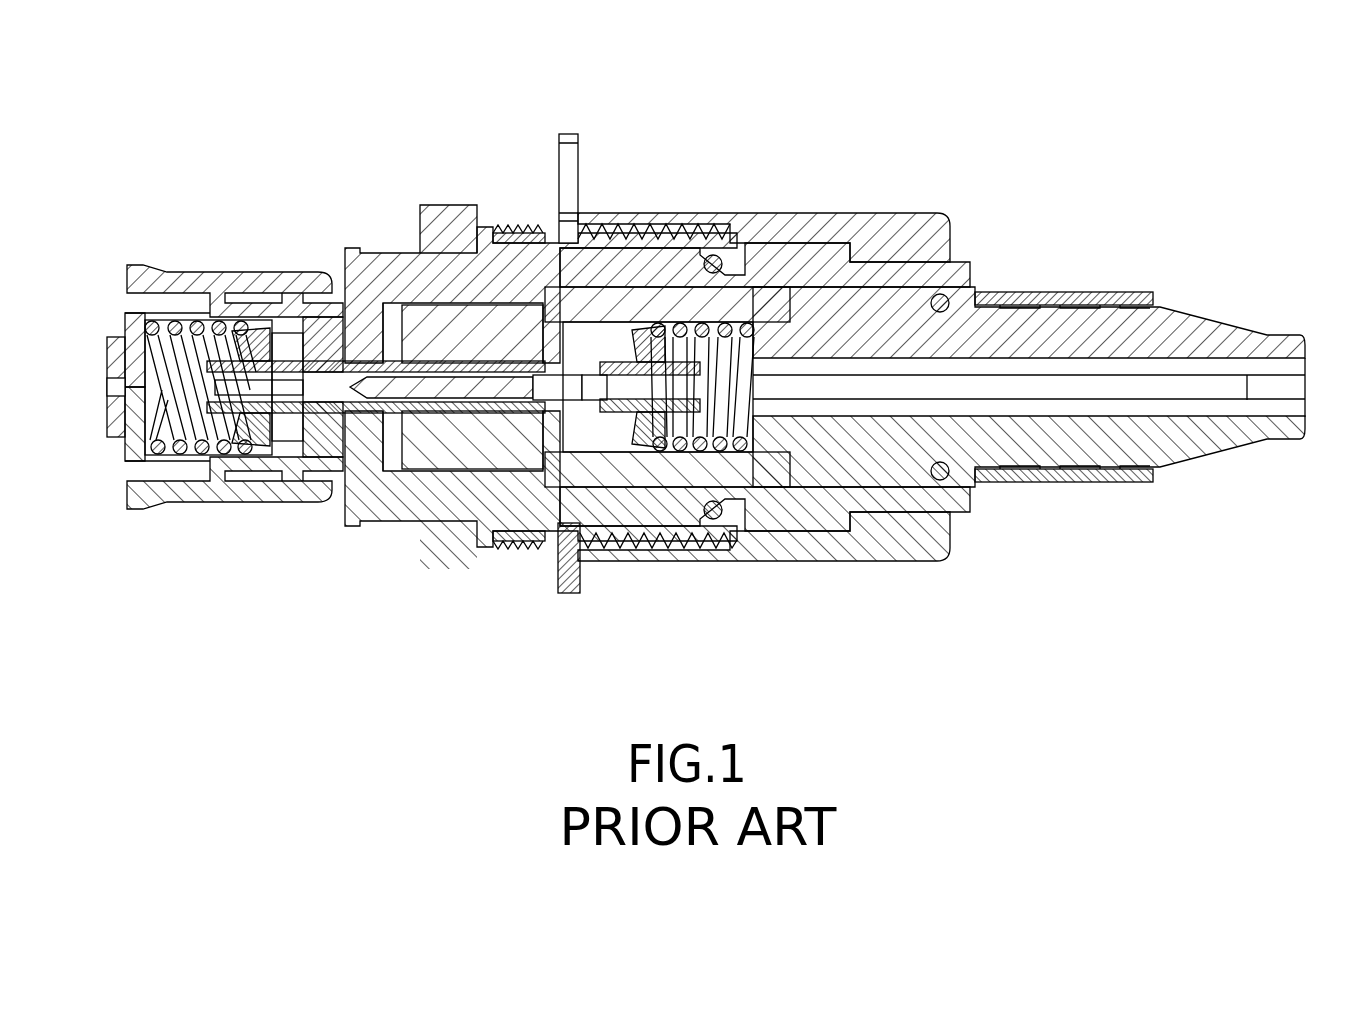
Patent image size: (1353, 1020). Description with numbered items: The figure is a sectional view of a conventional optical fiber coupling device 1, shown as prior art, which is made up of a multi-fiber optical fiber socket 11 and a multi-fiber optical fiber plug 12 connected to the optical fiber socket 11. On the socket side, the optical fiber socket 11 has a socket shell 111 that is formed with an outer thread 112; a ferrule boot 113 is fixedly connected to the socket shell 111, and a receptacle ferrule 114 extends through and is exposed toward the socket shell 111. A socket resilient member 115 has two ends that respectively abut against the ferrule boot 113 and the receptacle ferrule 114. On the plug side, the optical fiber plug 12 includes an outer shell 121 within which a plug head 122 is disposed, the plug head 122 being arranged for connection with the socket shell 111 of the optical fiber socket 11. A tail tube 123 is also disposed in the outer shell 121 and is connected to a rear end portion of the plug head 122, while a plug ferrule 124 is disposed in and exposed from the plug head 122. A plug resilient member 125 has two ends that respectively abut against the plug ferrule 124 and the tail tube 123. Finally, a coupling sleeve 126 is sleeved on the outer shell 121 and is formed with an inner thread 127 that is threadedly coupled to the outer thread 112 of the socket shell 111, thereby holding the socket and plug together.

The optical fiber coupling device 1 is at (640, 145).
The optical fiber socket 11 is at (348, 206).
The socket shell 111 is at (455, 222).
The outer thread 112 is at (638, 557).
The ferrule boot 113 is at (282, 436).
The receptacle ferrule 114 is at (317, 355).
The socket resilient member 115 is at (178, 458).
The optical fiber plug 12 is at (938, 188).
The outer shell 121 is at (828, 255).
The plug head 122 is at (675, 298).
The tail tube 123 is at (1210, 330).
The plug ferrule 124 is at (513, 535).
The plug resilient member 125 is at (738, 458).
The coupling sleeve 126 is at (800, 212).
The inner thread 127 is at (670, 545).